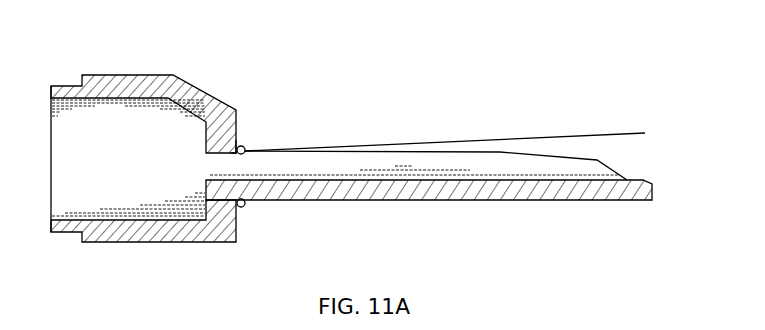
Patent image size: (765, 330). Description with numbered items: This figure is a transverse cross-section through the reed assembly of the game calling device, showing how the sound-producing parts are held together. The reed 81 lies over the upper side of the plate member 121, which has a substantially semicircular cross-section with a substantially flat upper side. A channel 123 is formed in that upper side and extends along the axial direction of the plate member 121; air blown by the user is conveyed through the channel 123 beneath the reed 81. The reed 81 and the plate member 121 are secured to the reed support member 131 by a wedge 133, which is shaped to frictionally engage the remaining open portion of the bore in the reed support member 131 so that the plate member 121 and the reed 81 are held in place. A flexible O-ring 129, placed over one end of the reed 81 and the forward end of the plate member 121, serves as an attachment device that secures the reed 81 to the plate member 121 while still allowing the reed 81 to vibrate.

The reed support member 131 is at (102, 75).
The wedge 133 is at (238, 145).
The flexible O-ring 129 is at (244, 149).
The plate member 121 is at (507, 202).
The channel 123 is at (526, 160).
The reed 81 is at (620, 132).